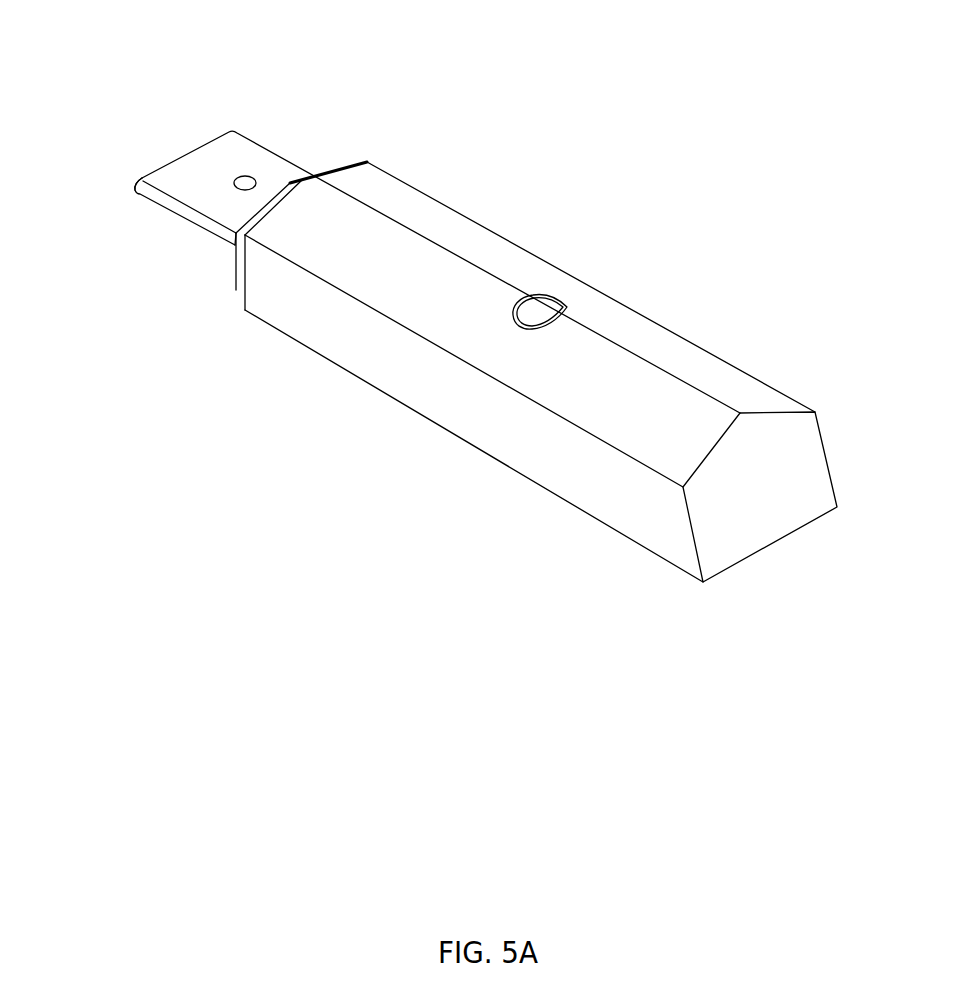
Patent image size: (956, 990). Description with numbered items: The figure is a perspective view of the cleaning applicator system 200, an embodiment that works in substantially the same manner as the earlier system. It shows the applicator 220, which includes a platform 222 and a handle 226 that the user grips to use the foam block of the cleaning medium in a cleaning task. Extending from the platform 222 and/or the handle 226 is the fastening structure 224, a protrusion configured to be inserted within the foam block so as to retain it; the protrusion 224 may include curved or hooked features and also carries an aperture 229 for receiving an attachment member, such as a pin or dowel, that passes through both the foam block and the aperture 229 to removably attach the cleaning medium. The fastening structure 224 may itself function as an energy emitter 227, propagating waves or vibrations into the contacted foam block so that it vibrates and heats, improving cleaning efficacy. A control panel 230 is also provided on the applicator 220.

The cleaning applicator system 200 is at (256, 55).
The applicator 220 is at (570, 556).
The platform 222 is at (236, 290).
The fastening structure 224 is at (178, 118).
The handle 226 is at (450, 433).
The energy emitter 227 is at (176, 210).
The aperture 229 is at (250, 176).
The control panel 230 is at (583, 295).